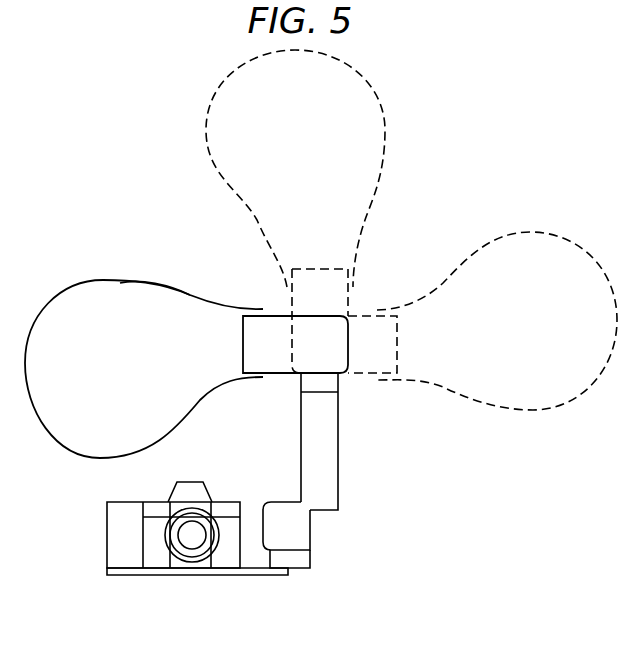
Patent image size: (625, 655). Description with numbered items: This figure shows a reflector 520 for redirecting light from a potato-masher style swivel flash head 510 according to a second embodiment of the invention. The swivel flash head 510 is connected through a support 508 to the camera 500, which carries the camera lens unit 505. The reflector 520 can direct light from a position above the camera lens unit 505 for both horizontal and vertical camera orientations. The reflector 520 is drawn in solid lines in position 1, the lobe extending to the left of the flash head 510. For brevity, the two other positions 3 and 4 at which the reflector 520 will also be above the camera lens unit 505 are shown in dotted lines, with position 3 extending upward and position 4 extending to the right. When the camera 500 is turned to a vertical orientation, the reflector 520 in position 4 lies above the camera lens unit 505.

The position 1 is at (109, 378).
The position 3 is at (300, 171).
The position 4 is at (522, 337).
The camera 500 is at (118, 575).
The camera lens unit 505 is at (188, 547).
The support 508 is at (302, 570).
The potato-masher style swivel flash head 510 is at (348, 343).
The reflector 520 is at (124, 287).